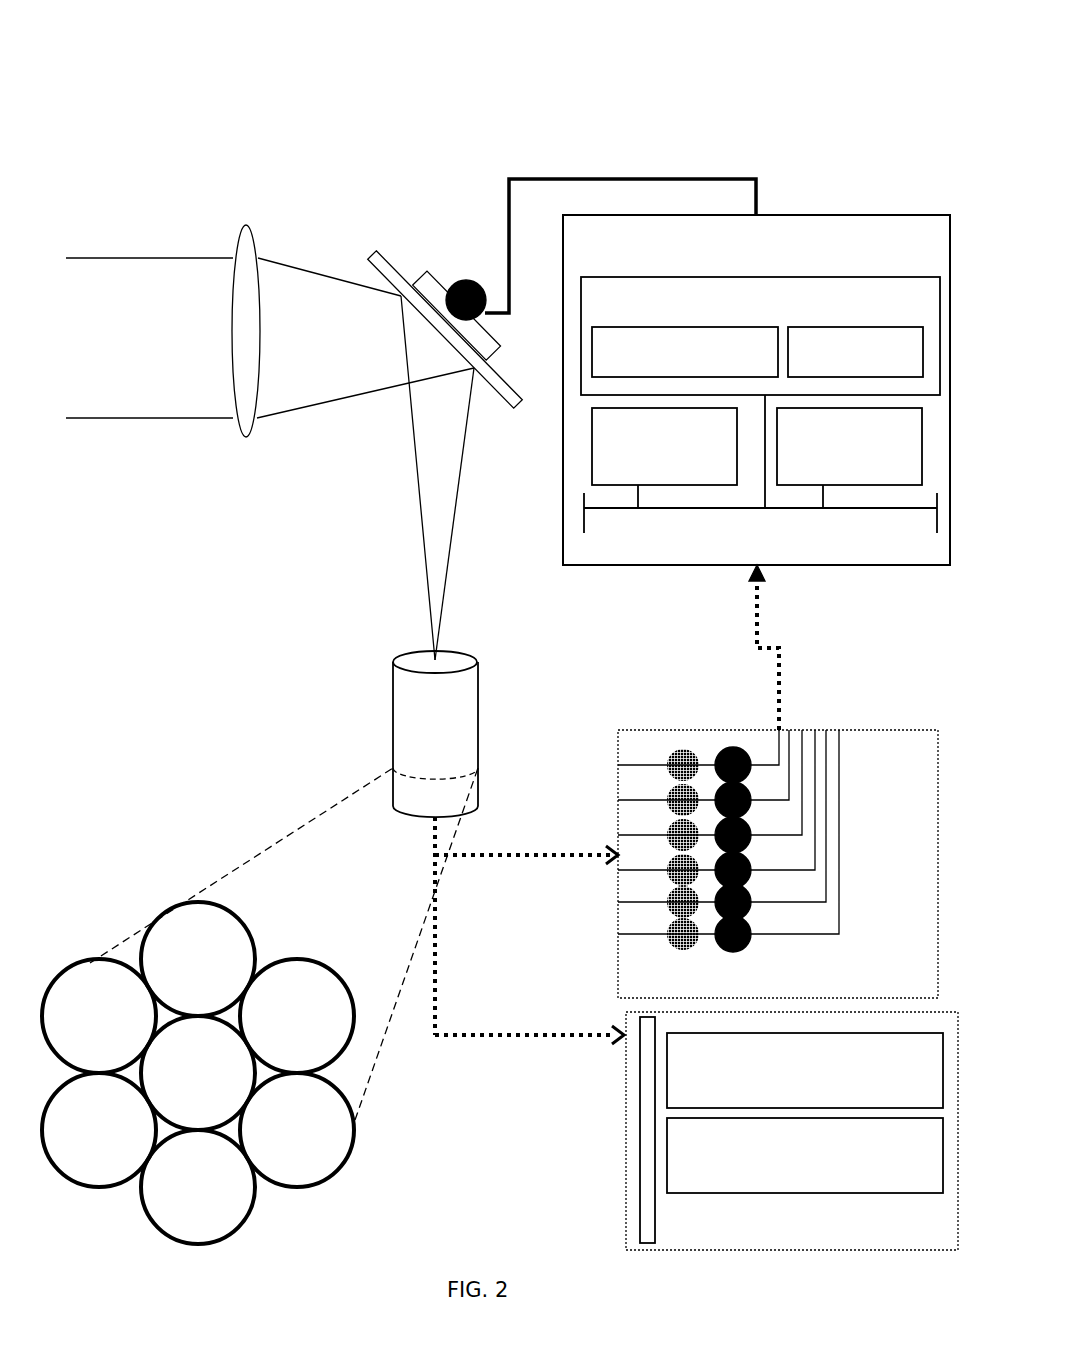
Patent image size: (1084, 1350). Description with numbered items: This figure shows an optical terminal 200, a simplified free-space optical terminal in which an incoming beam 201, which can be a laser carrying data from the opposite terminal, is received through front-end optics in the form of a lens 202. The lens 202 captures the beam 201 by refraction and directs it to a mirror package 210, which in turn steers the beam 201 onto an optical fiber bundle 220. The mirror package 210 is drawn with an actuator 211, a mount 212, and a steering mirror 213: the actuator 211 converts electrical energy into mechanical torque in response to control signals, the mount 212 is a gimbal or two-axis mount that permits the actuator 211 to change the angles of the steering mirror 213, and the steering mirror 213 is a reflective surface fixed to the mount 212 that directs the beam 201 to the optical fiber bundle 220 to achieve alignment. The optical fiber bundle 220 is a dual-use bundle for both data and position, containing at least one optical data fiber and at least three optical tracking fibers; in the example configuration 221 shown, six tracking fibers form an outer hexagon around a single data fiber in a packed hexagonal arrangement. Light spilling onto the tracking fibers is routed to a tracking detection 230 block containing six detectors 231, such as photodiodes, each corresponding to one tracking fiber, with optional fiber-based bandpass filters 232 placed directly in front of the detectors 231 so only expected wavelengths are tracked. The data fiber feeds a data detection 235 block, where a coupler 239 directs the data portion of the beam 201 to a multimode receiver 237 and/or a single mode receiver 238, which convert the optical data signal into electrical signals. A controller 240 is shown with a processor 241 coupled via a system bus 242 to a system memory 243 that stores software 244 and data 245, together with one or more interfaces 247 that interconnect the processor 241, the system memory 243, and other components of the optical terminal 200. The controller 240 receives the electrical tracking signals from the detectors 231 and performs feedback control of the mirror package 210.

The optical terminal 200 is at (802, 118).
The beam 201 is at (145, 423).
The lens 202 is at (243, 228).
The mirror package 210 is at (414, 319).
The actuator 211 is at (457, 270).
The mount 212 is at (413, 278).
The steering mirror 213 is at (373, 254).
The optical fiber bundle 220 is at (393, 664).
The example configuration 221 is at (260, 1002).
The tracking detection 230 is at (739, 781).
The detectors 231 is at (735, 750).
The filters 232 is at (668, 757).
The data detection 235 is at (722, 1131).
The multimode receiver 237 is at (805, 1155).
The single mode receiver 238 is at (805, 1070).
The coupler 239 is at (638, 1132).
The controller 240 is at (756, 390).
The processor 241 is at (664, 446).
The system bus 242 is at (668, 510).
The system memory 243 is at (760, 336).
The software 244 is at (685, 352).
The data 245 is at (855, 352).
The interfaces 247 is at (849, 446).